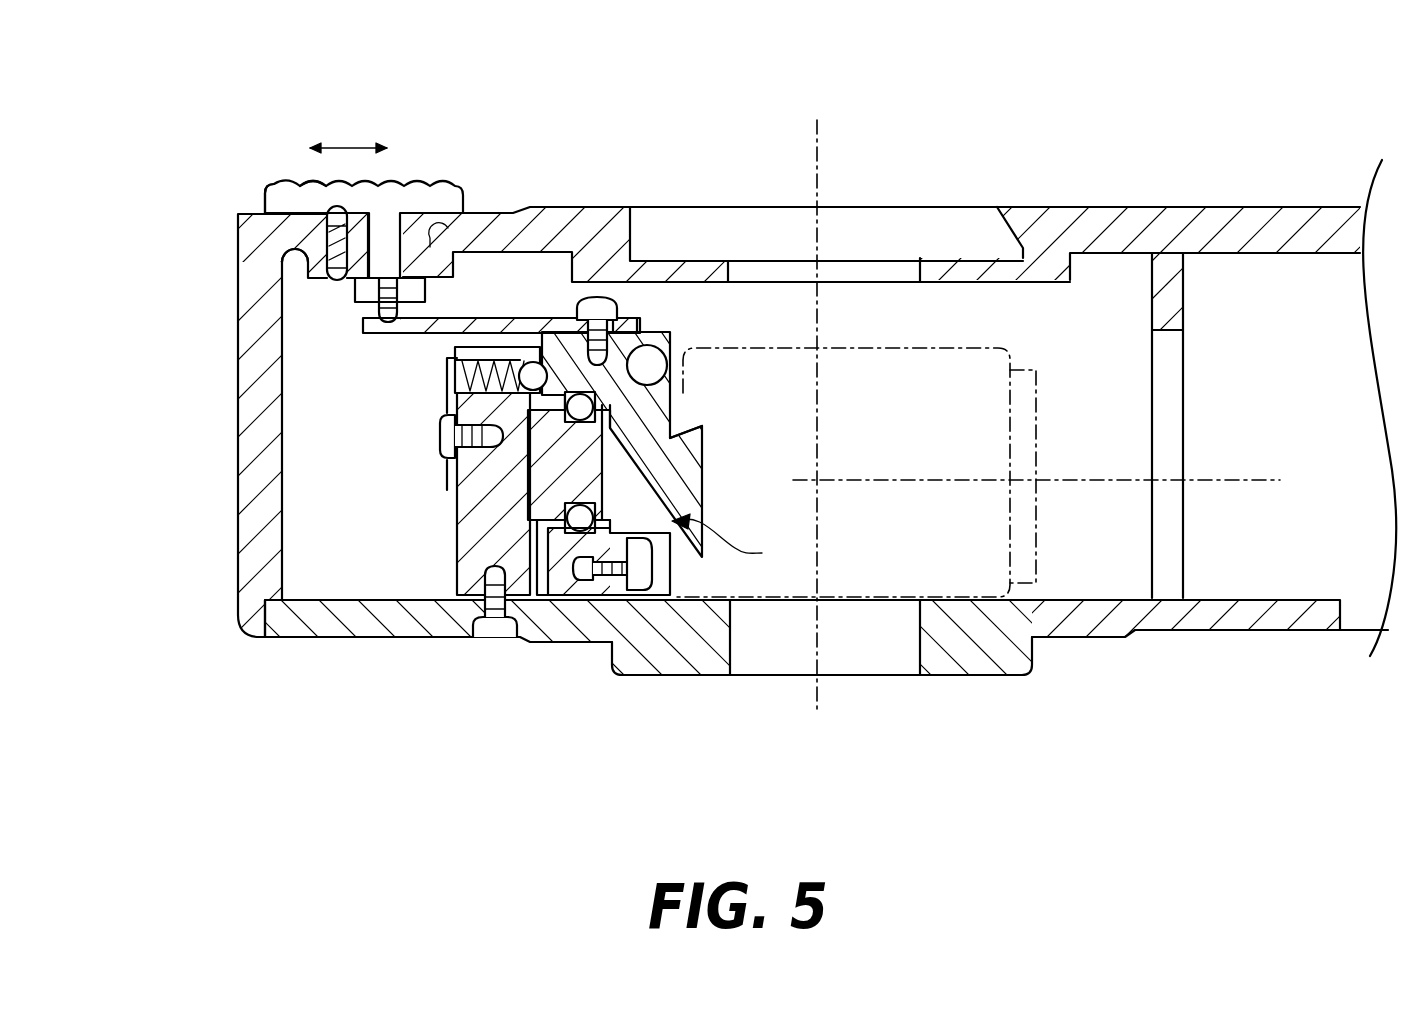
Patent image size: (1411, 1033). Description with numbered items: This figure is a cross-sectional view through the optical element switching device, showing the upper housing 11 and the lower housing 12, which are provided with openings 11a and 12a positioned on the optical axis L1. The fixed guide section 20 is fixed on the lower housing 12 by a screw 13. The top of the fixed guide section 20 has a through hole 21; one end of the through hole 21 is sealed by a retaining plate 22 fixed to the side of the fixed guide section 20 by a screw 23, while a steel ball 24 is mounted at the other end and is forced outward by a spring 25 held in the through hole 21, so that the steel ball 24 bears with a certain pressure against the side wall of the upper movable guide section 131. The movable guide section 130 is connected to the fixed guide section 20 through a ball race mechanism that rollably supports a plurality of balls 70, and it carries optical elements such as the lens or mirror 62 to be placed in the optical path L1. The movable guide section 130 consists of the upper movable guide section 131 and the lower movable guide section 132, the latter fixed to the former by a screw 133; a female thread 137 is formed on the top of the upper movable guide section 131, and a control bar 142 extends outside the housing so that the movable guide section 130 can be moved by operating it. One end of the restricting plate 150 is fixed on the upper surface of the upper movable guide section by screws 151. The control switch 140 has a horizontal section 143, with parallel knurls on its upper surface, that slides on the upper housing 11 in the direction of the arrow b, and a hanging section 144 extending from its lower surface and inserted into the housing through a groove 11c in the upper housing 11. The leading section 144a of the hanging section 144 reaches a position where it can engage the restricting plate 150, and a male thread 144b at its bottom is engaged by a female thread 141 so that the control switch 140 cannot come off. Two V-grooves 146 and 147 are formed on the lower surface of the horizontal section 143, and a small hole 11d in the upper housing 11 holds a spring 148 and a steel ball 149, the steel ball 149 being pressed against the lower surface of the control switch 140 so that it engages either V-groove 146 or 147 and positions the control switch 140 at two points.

The upper housing 11 is at (1268, 218).
The opening 11a is at (920, 258).
The groove 11c is at (443, 240).
The small hole 11d is at (353, 287).
The lower housing 12 is at (1190, 620).
The opening 12a is at (910, 648).
The screw 13 is at (472, 630).
The fixed guide section 20 is at (458, 553).
The through hole 21 is at (455, 362).
The retaining plate 22 is at (452, 472).
The screw 23 is at (440, 437).
The steel ball 24 is at (532, 362).
The spring 25 is at (457, 372).
The optical element 62 is at (1038, 432).
The balls 70 is at (586, 522).
The movable guide section 130 is at (743, 542).
The upper movable guide section 131 is at (703, 470).
The lower movable guide section 132 is at (573, 600).
The screw 133 is at (644, 580).
The female thread 137 is at (680, 412).
The control switch 140 is at (371, 258).
The female thread 141 is at (365, 297).
The control bar 142 is at (668, 370).
The horizontal section 143 is at (264, 193).
The hanging section 144 is at (405, 211).
The leading section 144a is at (385, 318).
The male thread 144b is at (428, 283).
The V-groove 146 is at (322, 216).
The V-groove 147 is at (337, 207).
The spring 148 is at (262, 283).
The steel ball 149 is at (323, 222).
The restricting plate 150 is at (618, 312).
The screws 151 is at (607, 306).
The optical axis L1 is at (817, 140).
The arrow b is at (348, 146).